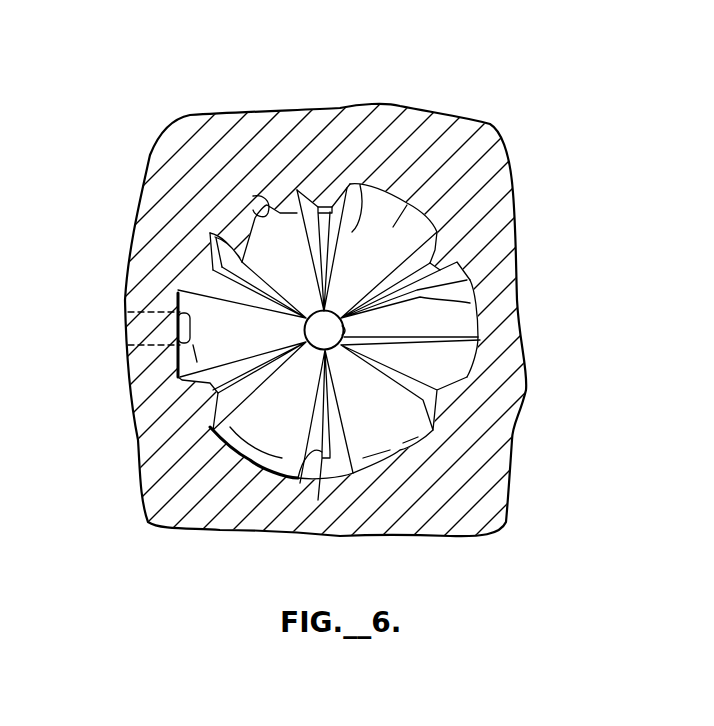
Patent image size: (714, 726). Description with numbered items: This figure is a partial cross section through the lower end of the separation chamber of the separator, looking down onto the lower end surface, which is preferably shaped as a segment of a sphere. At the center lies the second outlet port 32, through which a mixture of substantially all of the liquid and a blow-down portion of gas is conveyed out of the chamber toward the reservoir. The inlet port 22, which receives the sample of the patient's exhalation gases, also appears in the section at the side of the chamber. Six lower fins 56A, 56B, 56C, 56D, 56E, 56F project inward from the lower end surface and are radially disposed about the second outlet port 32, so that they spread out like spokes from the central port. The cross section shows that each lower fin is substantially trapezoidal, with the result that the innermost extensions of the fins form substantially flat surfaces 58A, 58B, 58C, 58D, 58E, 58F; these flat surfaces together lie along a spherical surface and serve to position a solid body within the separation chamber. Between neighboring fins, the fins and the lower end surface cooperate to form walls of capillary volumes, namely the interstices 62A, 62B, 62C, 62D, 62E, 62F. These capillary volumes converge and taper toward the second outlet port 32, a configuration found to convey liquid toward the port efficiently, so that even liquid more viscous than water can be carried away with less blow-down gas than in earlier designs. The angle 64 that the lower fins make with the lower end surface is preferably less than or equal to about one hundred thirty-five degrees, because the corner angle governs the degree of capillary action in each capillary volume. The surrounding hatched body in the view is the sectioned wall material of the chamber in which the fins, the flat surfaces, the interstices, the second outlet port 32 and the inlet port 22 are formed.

The inlet port 22 is at (178, 315).
The second outlet port 32 is at (515, 367).
The lower fin 56A is at (453, 400).
The lower fin 56B is at (213, 393).
The lower fin 56C is at (322, 203).
The lower fin 56D is at (240, 270).
The lower fin 56E is at (318, 500).
The lower fin 56F is at (433, 263).
The flat surface 58A is at (403, 443).
The flat surface 58B is at (213, 387).
The flat surface 58C is at (393, 227).
The flat surface 58D is at (215, 232).
The flat surface 58E is at (280, 480).
The flat surface 58F is at (480, 303).
The interstice 62A is at (405, 452).
The interstice 62B is at (203, 352).
The interstice 62C is at (385, 225).
The interstice 62D is at (243, 220).
The interstice 62E is at (170, 528).
The interstice 62F is at (458, 327).
The angle 64 is at (257, 207).